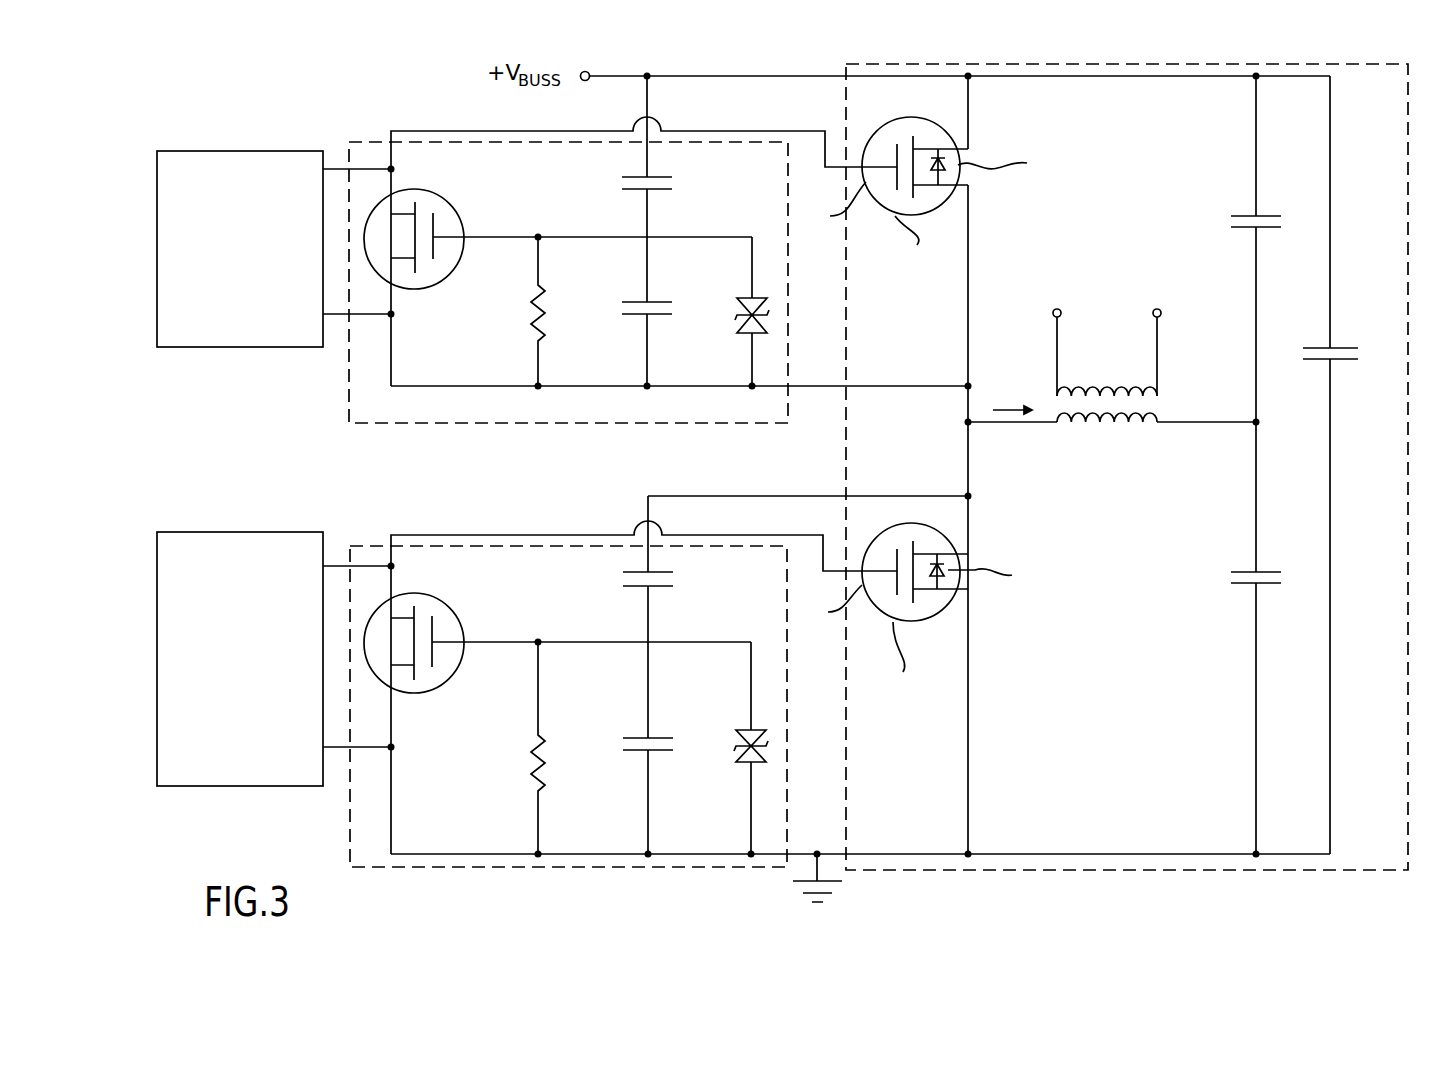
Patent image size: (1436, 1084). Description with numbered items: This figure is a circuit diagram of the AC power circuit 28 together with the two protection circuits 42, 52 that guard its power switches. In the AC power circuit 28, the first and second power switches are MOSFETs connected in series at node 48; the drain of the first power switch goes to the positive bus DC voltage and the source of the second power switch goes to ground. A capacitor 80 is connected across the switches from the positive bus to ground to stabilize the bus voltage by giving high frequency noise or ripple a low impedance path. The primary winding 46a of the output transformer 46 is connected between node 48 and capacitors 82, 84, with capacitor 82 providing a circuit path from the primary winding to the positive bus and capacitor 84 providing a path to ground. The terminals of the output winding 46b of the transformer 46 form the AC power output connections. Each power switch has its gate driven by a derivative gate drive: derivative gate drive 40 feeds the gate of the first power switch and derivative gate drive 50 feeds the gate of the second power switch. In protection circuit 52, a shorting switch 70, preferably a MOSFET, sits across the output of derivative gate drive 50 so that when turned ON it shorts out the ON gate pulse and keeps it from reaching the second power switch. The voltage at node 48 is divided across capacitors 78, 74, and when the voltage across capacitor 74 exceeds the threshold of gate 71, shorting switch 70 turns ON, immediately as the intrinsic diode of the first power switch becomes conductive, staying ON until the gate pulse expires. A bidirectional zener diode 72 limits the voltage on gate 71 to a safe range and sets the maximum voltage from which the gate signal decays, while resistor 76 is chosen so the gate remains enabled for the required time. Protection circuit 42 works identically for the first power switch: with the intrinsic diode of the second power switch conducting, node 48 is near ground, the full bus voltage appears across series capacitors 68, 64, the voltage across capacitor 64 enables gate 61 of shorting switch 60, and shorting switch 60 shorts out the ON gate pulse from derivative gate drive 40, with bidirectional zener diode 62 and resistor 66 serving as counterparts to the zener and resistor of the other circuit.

The AC power circuit 28 is at (1028, 500).
The derivative gate drive 40 is at (183, 150).
The protection circuit 42 is at (658, 277).
The output transformer 46 is at (1149, 370).
The primary winding 46a is at (1157, 413).
The output winding 46b is at (1160, 375).
The node 48 is at (972, 425).
The derivative gate drive 50 is at (183, 531).
The protection circuit 52 is at (840, 709).
The shorting switch 60 is at (447, 190).
The gate 61 is at (434, 226).
The bidirectional zener diode 62 is at (768, 316).
The capacitor 64 is at (657, 317).
The resistor 66 is at (545, 290).
The capacitor 68 is at (658, 192).
The shorting switch 70 is at (440, 595).
The gate 71 is at (437, 634).
The bidirectional zener diode 72 is at (745, 728).
The capacitor 74 is at (640, 735).
The resistor 76 is at (531, 740).
The capacitor 78 is at (660, 590).
The capacitor 80 is at (1343, 365).
The capacitor 82 is at (1245, 213).
The capacitor 84 is at (1245, 590).